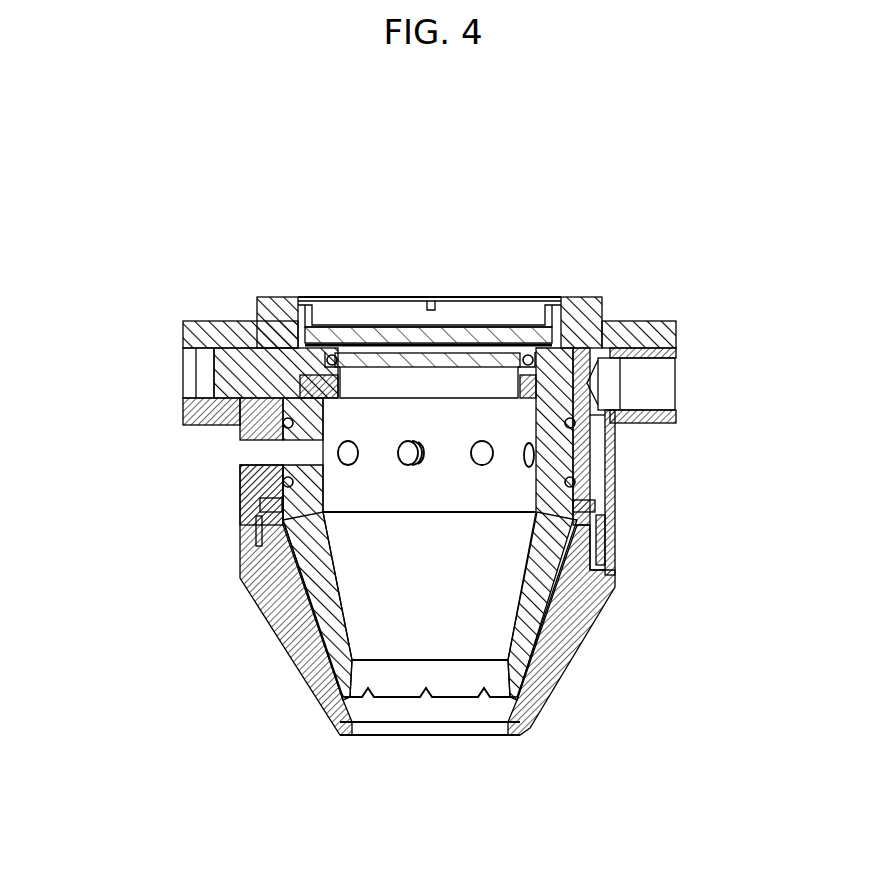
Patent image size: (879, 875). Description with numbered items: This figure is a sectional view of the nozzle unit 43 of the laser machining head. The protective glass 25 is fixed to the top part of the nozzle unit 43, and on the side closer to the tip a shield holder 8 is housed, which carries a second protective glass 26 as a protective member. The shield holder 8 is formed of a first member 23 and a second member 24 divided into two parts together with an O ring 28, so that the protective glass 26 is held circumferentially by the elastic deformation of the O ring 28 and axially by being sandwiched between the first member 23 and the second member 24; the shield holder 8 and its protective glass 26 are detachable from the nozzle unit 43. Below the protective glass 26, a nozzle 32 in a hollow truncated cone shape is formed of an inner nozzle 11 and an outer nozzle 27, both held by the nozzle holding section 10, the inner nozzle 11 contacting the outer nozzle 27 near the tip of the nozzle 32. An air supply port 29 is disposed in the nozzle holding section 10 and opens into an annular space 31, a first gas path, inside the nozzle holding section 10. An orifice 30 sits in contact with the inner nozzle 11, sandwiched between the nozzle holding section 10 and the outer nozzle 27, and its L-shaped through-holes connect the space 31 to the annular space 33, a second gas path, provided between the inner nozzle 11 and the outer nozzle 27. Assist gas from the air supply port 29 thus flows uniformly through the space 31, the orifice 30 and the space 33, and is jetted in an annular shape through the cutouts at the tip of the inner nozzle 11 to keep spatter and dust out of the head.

The shield holder 8 is at (195, 373).
The nozzle holding section 10 is at (238, 490).
The inner nozzle 11 is at (308, 587).
The first member 23 is at (220, 427).
The second member 24 is at (182, 342).
The protective glass 25 is at (483, 335).
The protective glass 26 is at (402, 360).
The outer nozzle 27 is at (303, 657).
The O ring 28 is at (600, 418).
The air supply port 29 is at (657, 378).
The orifice 30 is at (600, 523).
The annular space 31 is at (597, 472).
The nozzle 32 is at (160, 595).
The annular space 33 is at (600, 603).
The nozzle unit 43 is at (727, 756).